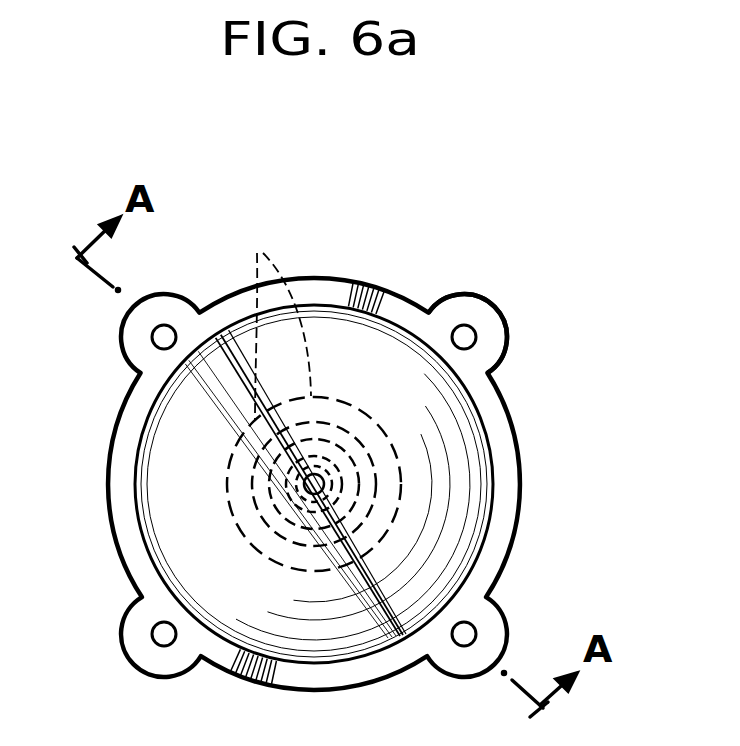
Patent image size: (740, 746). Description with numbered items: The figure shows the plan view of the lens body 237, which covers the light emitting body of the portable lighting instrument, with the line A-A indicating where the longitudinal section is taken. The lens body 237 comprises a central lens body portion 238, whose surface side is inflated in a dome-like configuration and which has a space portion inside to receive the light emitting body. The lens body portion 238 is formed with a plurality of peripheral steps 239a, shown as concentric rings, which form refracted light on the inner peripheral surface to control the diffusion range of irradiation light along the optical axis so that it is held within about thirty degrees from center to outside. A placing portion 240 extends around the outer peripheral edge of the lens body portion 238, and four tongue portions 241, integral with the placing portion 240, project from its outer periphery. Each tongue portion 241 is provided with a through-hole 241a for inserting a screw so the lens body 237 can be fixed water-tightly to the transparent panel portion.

The lens body 237 is at (385, 278).
The lens body portion 238 is at (458, 522).
The peripheral steps 239a is at (295, 421).
The placing portion 240 is at (505, 438).
The tongue portion 241 is at (502, 333).
The through-hole 241a is at (466, 331).